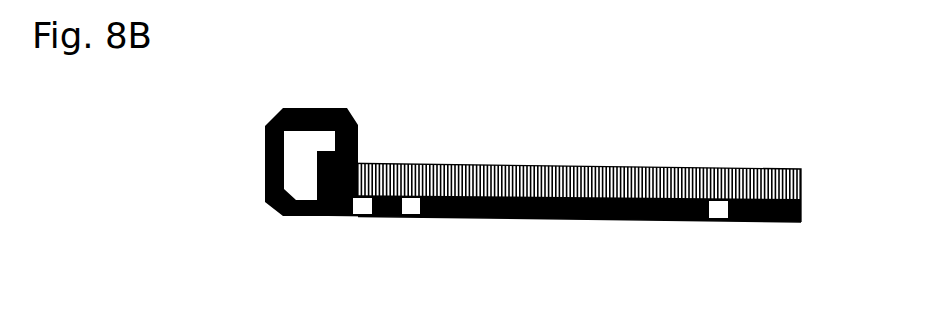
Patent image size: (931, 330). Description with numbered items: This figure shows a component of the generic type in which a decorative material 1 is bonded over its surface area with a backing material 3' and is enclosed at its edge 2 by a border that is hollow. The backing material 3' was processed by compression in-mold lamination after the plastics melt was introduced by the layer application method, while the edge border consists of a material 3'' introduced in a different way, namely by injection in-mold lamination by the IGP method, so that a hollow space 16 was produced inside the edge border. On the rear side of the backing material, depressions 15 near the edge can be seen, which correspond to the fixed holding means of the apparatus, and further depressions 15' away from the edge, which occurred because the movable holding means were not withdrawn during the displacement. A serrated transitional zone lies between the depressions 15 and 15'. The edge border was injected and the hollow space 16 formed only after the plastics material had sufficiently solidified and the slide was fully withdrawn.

The decorative material 1 is at (513, 185).
The edge 2 is at (340, 215).
The backing material 3' is at (579, 248).
The edge border material 3'' is at (264, 192).
The depressions near the edge 15 is at (400, 239).
The depressions away from the edge 15' is at (607, 241).
The hollow space 16 is at (301, 177).